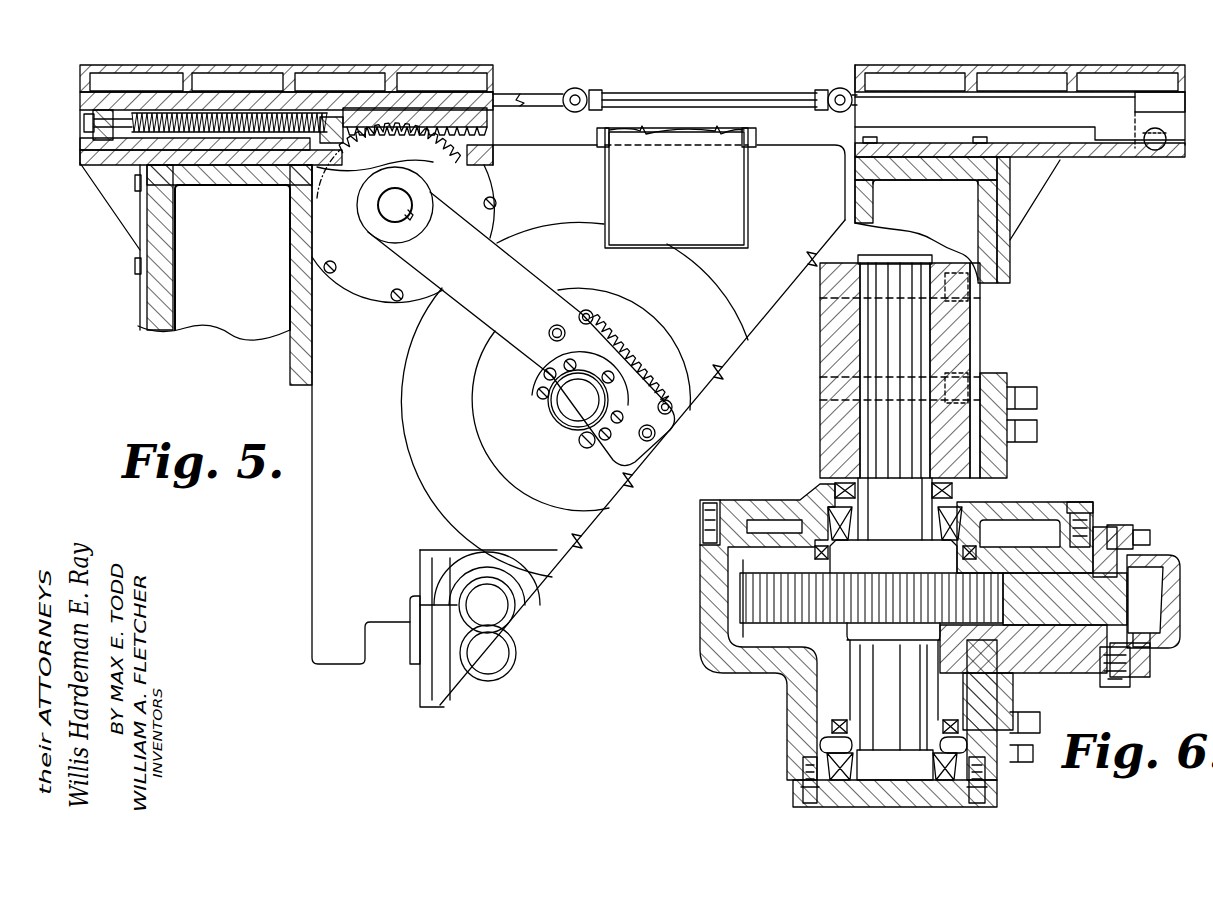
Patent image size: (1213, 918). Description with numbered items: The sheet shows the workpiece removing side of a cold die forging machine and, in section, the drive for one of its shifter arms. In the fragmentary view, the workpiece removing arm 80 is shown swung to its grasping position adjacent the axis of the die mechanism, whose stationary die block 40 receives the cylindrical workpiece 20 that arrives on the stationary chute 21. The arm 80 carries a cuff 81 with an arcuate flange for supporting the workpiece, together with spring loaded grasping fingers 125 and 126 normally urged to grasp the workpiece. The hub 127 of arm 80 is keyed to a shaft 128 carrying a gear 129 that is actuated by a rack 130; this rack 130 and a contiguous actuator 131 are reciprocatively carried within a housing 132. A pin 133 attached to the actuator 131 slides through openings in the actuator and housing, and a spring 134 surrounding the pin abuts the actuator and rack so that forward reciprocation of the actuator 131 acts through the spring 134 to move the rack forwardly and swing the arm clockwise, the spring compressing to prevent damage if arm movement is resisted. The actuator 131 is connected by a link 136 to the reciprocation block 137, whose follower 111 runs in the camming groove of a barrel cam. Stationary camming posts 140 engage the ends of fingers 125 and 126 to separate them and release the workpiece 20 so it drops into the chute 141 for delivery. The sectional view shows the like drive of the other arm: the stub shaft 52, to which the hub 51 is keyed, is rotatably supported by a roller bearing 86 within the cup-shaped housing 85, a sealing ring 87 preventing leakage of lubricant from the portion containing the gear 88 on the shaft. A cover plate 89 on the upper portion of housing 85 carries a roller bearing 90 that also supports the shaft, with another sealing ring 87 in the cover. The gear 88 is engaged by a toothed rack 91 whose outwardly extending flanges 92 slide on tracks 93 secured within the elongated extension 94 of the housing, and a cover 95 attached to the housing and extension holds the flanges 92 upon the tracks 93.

In FIG. 5, the cylindrical workpiece 20 is at (560, 415).
In FIG. 5, the stationary chute 21 is at (455, 683).
In FIG. 5, the stationary die block 40 is at (660, 344).
In FIG. 6, the hub 51 is at (818, 352).
In FIG. 6, the stub shaft 52 is at (912, 345).
In FIG. 5, the workpiece removing arm 80 is at (515, 282).
In FIG. 5, the cuff 81 is at (562, 358).
In FIG. 6, the cup-shaped housing 85 is at (705, 652).
In FIG. 6, the roller bearing 86 is at (947, 785).
In FIG. 6, the sealing ring 87 is at (835, 490).
In FIG. 6, the gear 88 is at (755, 603).
In FIG. 6, the cover plate 89 is at (757, 498).
In FIG. 6, the roller bearing 90 is at (983, 520).
In FIG. 6, the toothed rack 91 is at (1058, 590).
In FIG. 6, the flanges 92 is at (1150, 538).
In FIG. 6, the tracks 93 is at (1085, 530).
In FIG. 6, the elongated extension 94 is at (1125, 535).
In FIG. 6, the cover 95 is at (1174, 600).
In FIG. 5, the cam follower 111 is at (1155, 152).
In FIG. 5, the grasping finger 125 is at (538, 396).
In FIG. 5, the grasping finger 126 is at (580, 452).
In FIG. 5, the hub 127 is at (385, 220).
In FIG. 5, the shaft 128 is at (380, 209).
In FIG. 5, the gear 129 is at (440, 166).
In FIG. 5, the rack 130 is at (485, 118).
In FIG. 5, the actuator 131 is at (512, 90).
In FIG. 5, the housing 132 is at (76, 160).
In FIG. 5, the pin 133 is at (236, 125).
In FIG. 5, the spring 134 is at (275, 127).
In FIG. 5, the link 136 is at (678, 95).
In FIG. 5, the reciprocation block 137 is at (1068, 115).
In FIG. 5, the stationary camming posts 140 is at (612, 145).
In FIG. 5, the chute 141 is at (730, 202).